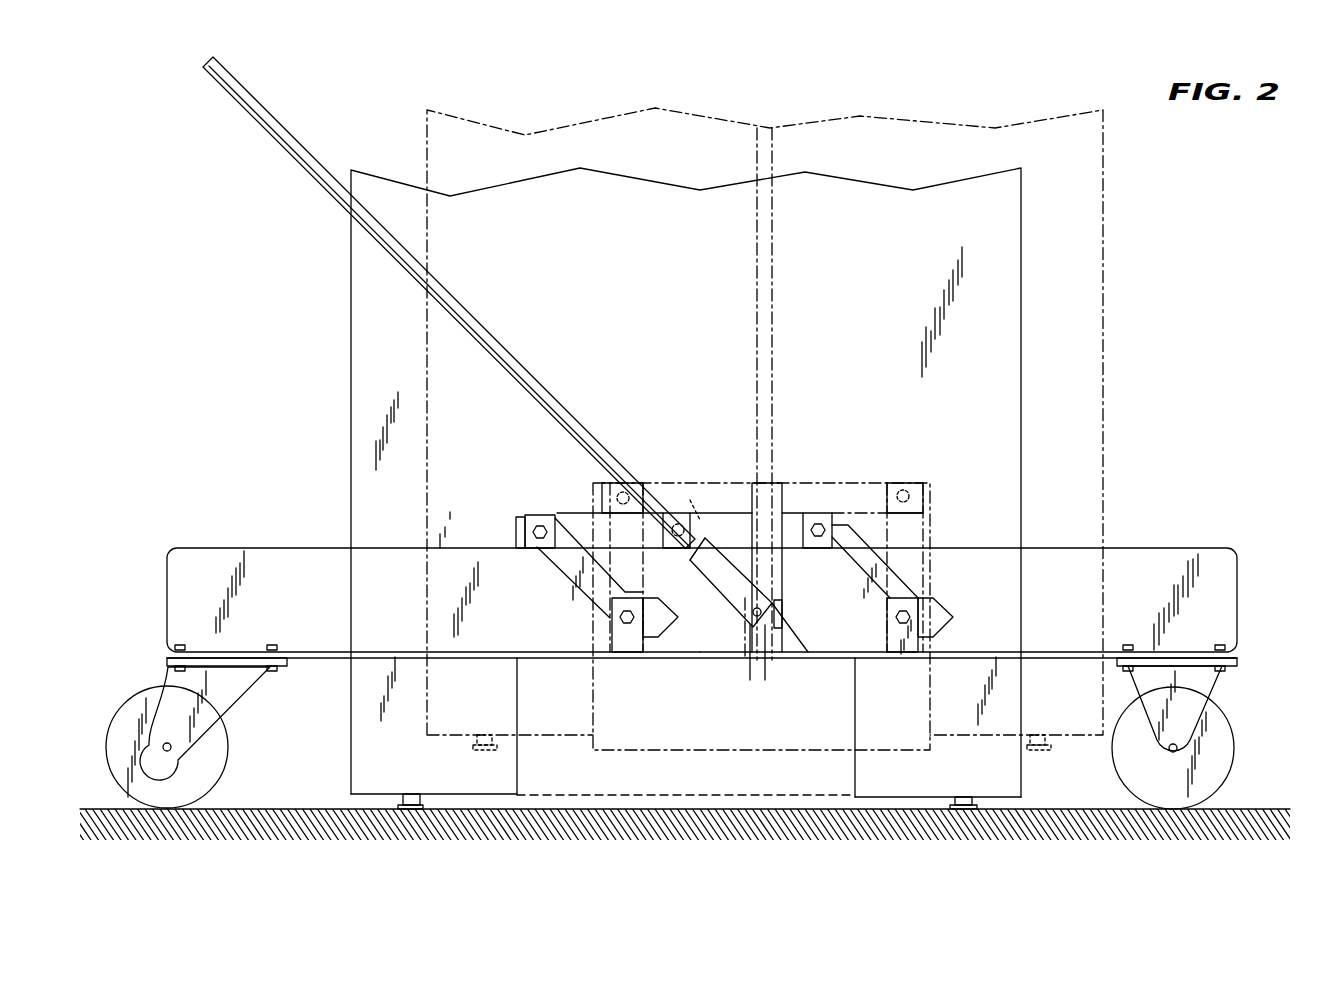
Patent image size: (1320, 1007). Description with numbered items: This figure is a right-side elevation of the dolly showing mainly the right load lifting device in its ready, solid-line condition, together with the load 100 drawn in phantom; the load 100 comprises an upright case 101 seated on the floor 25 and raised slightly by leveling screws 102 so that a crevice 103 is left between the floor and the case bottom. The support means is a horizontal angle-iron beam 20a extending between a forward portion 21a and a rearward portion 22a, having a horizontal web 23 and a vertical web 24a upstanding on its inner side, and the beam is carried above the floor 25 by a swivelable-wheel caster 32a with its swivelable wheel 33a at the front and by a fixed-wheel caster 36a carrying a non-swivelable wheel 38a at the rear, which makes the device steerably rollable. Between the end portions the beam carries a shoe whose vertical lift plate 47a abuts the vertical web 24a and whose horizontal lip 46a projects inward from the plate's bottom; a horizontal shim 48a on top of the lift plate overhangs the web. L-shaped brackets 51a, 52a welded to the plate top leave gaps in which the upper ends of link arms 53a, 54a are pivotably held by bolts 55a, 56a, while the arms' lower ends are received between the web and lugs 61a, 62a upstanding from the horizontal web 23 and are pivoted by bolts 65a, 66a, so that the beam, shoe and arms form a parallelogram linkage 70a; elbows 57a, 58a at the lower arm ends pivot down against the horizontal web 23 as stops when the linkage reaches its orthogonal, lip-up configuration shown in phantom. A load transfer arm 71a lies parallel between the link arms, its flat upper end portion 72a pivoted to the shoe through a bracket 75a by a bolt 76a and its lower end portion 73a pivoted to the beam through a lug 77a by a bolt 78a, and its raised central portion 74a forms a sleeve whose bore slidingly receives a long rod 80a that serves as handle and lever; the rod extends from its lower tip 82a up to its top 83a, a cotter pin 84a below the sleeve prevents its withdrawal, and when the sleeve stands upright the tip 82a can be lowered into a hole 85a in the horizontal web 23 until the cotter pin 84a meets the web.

The load 100 is at (286, 257).
The case 101 is at (351, 338).
The leveling screws 102 is at (405, 800).
The crevice 103 is at (462, 803).
The horizontal beam 20a is at (167, 656).
The forward portion 21a is at (272, 560).
The rearward portion 22a is at (1150, 550).
The frame base plate 23 is at (1065, 652).
The vertical web 24a is at (993, 548).
The floor 25 is at (1068, 809).
The swivelable-wheel caster 32a is at (265, 680).
The swivelable wheel 33a is at (232, 748).
The fixed-wheel caster 36a is at (1222, 685).
The wheel 38a is at (1237, 750).
The lip 46a is at (820, 777).
The lift plate 47a is at (857, 700).
The shim 48a is at (516, 532).
The bracket 51a is at (830, 513).
The bracket 52a is at (525, 520).
The link arm 53a is at (850, 588).
The link arm 54a is at (575, 578).
The bolt 55a is at (816, 513).
The bolt 56a is at (540, 522).
The elbow 57a is at (950, 620).
The elbow 58a is at (665, 645).
The lug 61a is at (887, 642).
The lug 62a is at (612, 643).
The bolt 65a is at (920, 602).
The bolt 66a is at (612, 618).
The parallelogram linkage 70a is at (650, 552).
The load transfer arm 71a is at (722, 588).
The upper end portion 72a is at (735, 520).
The lower end portion 73a is at (805, 580).
The raised central portion 74a is at (745, 520).
The bracket 75a is at (685, 513).
The bolt 76a is at (690, 510).
The lug 77a is at (758, 660).
The bolt 78a is at (790, 630).
The rod 80a is at (535, 378).
The lower tip 82a is at (743, 652).
The top 83a is at (288, 128).
The cotter pin 84a is at (730, 625).
The hole 85a is at (773, 660).